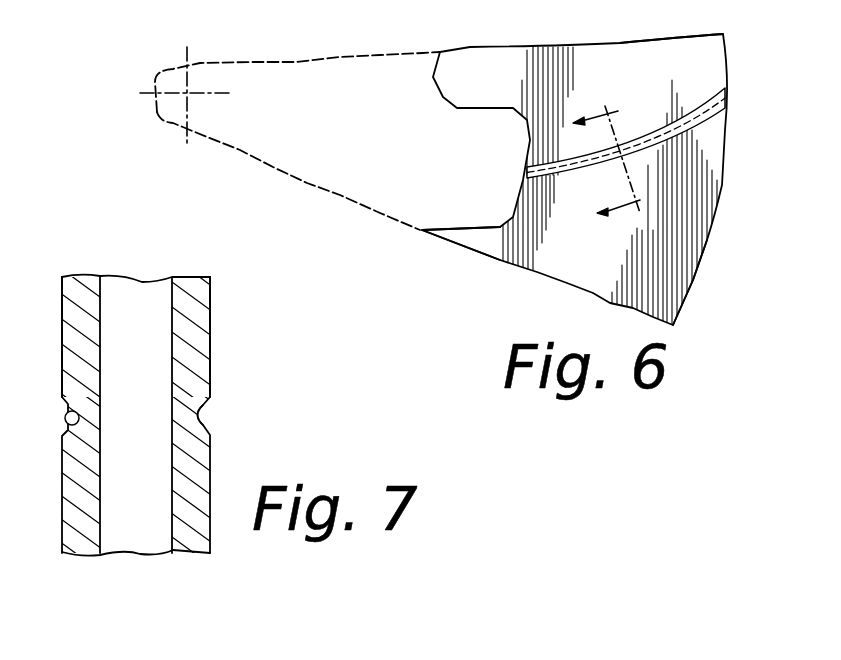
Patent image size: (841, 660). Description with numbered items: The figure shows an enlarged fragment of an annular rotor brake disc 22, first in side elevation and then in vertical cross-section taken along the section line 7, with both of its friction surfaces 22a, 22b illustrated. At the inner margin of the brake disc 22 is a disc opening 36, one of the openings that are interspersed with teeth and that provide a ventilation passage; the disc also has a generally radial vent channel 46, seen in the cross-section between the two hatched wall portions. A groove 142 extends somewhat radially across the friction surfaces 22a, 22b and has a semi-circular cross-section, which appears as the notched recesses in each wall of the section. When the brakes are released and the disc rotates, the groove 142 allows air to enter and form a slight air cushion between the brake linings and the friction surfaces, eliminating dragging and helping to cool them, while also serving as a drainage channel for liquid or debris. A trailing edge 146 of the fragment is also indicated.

In FIG. 6, the brake disc 22 is at (537, 280).
In FIG. 7, the brake disc 22 is at (203, 291).
In FIG. 6, the friction surface 22a is at (697, 72).
In FIG. 7, the friction surface 22a is at (62, 306).
In FIG. 7, the friction surface 22b is at (211, 362).
In FIG. 6, the disc opening 36 is at (503, 223).
In FIG. 6, the groove 142 is at (667, 143).
In FIG. 7, the groove 142 is at (78, 421).
In FIG. 6, the trailing edge 146 is at (693, 290).
In FIG. 7, the vent channel 46 is at (147, 498).
In FIG. 6, the section line 7 is at (615, 153).